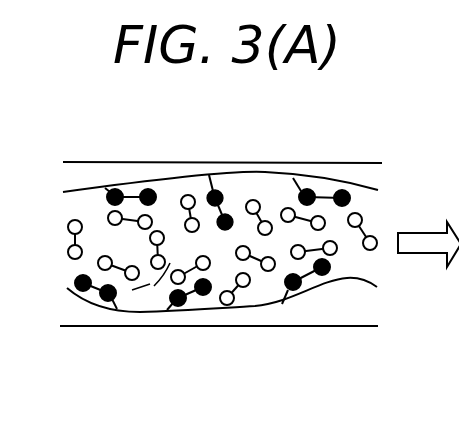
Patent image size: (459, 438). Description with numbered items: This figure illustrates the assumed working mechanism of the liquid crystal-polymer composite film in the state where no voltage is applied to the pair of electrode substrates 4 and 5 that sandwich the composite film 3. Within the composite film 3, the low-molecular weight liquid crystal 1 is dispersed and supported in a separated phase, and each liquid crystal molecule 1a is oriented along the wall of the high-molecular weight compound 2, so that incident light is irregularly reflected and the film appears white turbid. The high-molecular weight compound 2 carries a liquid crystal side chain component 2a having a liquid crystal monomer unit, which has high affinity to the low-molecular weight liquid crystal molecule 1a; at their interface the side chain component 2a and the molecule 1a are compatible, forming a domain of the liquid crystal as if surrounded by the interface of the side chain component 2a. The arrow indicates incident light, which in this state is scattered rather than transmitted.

The low-molecular weight liquid crystal 1 is at (154, 286).
The liquid crystal molecule 1a is at (76, 219).
The high-molecular weight compound 2 is at (263, 288).
The liquid crystal side chain component 2a is at (217, 191).
The composite film 3 is at (173, 178).
The electrode substrate 4 is at (285, 163).
The electrode substrate 5 is at (318, 326).